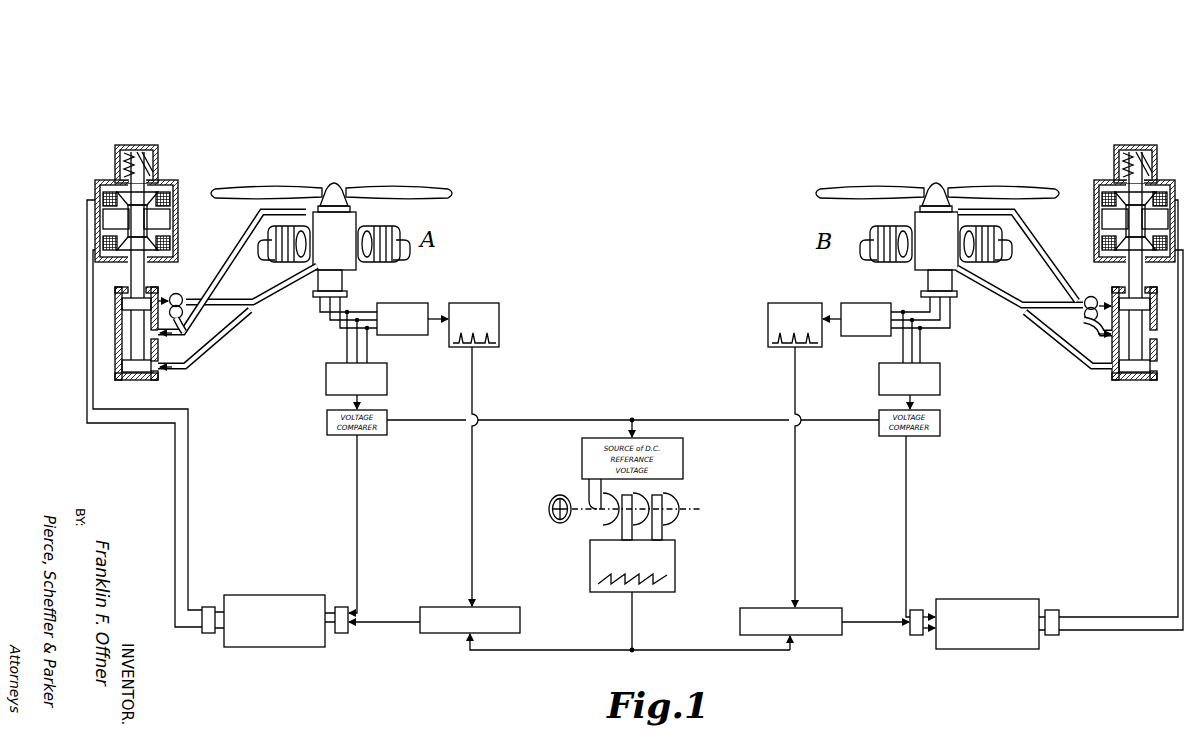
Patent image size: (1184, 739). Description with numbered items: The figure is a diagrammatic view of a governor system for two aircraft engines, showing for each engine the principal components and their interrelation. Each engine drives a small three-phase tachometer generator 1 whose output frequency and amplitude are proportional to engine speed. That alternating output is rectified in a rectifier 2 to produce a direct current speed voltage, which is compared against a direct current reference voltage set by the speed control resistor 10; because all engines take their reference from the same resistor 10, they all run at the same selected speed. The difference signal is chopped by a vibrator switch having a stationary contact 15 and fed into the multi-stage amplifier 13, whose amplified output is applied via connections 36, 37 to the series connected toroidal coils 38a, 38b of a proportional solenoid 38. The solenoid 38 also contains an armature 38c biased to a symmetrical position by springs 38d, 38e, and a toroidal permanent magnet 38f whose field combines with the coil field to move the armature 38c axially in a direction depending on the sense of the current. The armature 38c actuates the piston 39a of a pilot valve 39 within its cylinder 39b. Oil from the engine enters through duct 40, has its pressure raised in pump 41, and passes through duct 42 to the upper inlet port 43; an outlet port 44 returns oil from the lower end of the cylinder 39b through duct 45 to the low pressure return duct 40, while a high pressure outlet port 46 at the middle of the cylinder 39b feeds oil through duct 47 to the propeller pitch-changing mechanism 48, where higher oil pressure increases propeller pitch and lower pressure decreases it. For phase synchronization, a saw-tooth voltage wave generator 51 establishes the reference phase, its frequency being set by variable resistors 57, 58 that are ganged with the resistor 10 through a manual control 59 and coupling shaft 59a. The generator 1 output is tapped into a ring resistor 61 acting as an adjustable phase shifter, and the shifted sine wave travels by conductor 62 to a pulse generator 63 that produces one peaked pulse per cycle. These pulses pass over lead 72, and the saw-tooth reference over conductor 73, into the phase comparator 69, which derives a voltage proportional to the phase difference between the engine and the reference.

The tachometer generator 1 is at (345, 280).
The 3-phase rectifier unit 2 is at (388, 374).
The speed control resistor 10 is at (600, 513).
The multi-stage amplifier 13 is at (266, 596).
The stationary contact 15 is at (996, 599).
The connection 36 is at (93, 397).
The connection 37 is at (87, 377).
The proportional solenoid 38 is at (604, 212).
The toroidal coil 38a is at (97, 201).
The toroidal coil 38b is at (103, 238).
The armature 38c is at (117, 172).
The spring 38d is at (118, 150).
The spring 38e is at (154, 193).
The toroidal permanent magnet 38f is at (103, 219).
The pilot valve 39 is at (635, 275).
The piston 39a is at (137, 325).
The pilot valve cylinder 39b is at (125, 349).
The duct 40 is at (282, 295).
The pump 41 is at (184, 298).
The duct 42 is at (176, 295).
The upper inlet port 43 is at (174, 308).
The outlet port 44 is at (176, 364).
The duct 45 is at (198, 346).
The high pressure outlet port 46 is at (180, 334).
The duct 47 is at (189, 317).
The propeller pitch-changing mechanism 48 is at (354, 222).
The saw-tooth voltage wave generator 51 is at (676, 560).
The variable resistor 57 is at (640, 495).
The variable resistor 58 is at (681, 509).
The manual control 59 is at (548, 508).
The coupling shaft 59a is at (588, 500).
The ring resistor 61 is at (431, 298).
The conductor 62 is at (439, 318).
The pulse generator 63 is at (489, 305).
The phase comparator 69 is at (461, 606).
The lead 72 is at (470, 506).
The conductor 73 is at (578, 650).